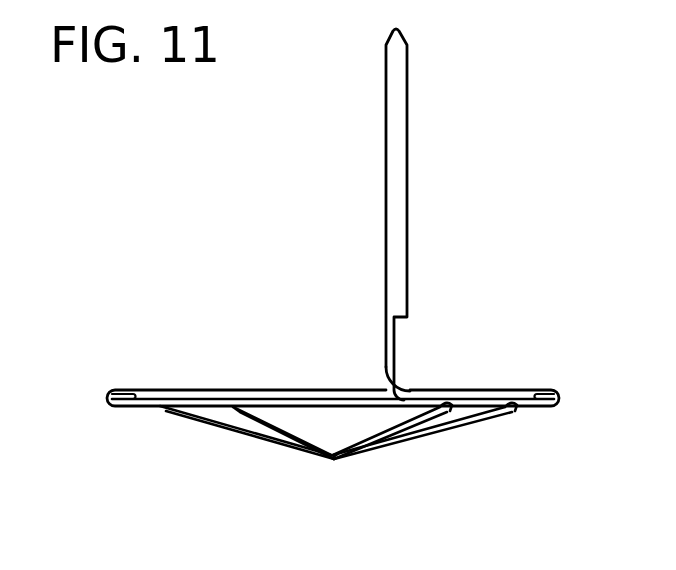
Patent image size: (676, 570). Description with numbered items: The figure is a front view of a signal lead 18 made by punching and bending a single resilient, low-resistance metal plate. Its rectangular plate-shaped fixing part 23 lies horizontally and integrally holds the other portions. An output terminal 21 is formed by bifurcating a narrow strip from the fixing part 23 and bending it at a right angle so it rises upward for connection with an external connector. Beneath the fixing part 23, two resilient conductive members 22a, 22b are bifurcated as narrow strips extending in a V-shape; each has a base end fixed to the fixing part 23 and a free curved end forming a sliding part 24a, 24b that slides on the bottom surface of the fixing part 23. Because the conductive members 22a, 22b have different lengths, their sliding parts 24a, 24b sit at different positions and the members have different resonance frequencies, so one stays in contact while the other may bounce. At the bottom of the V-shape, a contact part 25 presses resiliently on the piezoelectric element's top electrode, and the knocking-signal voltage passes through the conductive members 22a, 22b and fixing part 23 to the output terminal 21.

The signal lead 18 is at (333, 289).
The output terminal 21 is at (407, 132).
The fixing part 23 is at (283, 390).
The resilient conductive member 22a is at (247, 418).
The resilient conductive member 22b is at (257, 424).
The sliding part 24a is at (436, 411).
The sliding part 24b is at (504, 413).
The contact part 25 is at (334, 460).